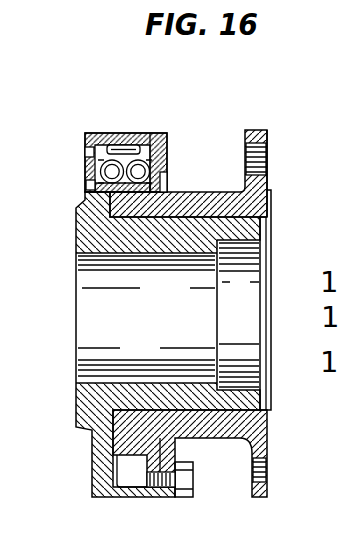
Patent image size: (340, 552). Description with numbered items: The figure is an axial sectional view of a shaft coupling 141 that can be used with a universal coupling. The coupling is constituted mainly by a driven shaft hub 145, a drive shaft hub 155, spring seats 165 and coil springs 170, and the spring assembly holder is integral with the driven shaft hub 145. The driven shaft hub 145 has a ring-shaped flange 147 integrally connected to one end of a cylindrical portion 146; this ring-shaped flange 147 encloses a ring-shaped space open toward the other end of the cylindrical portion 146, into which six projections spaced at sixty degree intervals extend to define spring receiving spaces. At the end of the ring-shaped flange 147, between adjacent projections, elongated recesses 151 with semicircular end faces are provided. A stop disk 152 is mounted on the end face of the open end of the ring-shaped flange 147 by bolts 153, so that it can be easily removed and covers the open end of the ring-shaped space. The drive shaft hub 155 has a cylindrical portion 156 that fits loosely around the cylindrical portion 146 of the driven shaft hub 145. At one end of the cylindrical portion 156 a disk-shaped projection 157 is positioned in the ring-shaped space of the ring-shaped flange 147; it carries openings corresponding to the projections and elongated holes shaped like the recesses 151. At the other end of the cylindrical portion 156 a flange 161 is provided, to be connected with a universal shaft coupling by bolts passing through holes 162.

The shaft coupling 141 is at (195, 157).
The driven shaft hub 145 is at (75, 224).
The cylindrical portion 146 is at (165, 248).
The ring-shaped flange 147 is at (85, 141).
The elongated recesses 151 is at (85, 152).
The stop disk 152 is at (165, 141).
The bolts 153 is at (191, 470).
The drive shaft hub 155 is at (268, 202).
The cylindrical portion 156 is at (227, 192).
The disk-shaped projection 157 is at (144, 145).
The flange 161 is at (268, 182).
The holes 162 is at (267, 143).
The spring seats 165 is at (170, 191).
The coil springs 170 is at (90, 188).